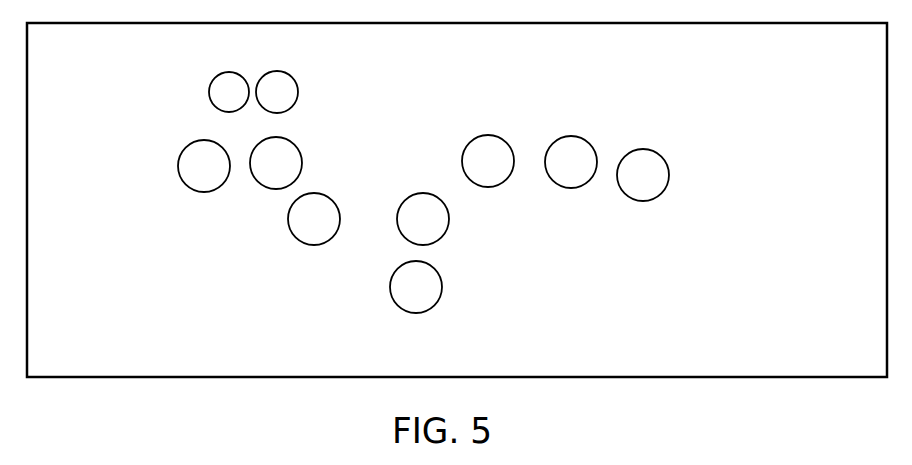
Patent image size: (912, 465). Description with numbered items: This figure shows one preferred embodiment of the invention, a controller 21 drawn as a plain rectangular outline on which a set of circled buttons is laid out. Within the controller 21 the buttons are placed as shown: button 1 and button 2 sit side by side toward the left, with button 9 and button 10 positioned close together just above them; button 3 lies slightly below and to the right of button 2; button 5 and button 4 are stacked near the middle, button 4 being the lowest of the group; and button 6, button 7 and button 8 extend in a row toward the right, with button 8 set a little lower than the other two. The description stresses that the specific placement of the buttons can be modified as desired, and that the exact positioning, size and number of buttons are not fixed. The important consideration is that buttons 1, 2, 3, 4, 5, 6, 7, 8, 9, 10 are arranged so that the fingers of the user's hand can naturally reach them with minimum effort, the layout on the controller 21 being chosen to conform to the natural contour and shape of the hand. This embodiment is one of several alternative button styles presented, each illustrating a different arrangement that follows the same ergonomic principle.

The controller 21 is at (475, 68).
The button 1 is at (213, 176).
The button 2 is at (285, 171).
The button 3 is at (323, 229).
The button 4 is at (425, 297).
The button 5 is at (432, 229).
The button 6 is at (497, 171).
The button 7 is at (580, 172).
The button 8 is at (652, 185).
The button 9 is at (221, 102).
The button 10 is at (263, 102).